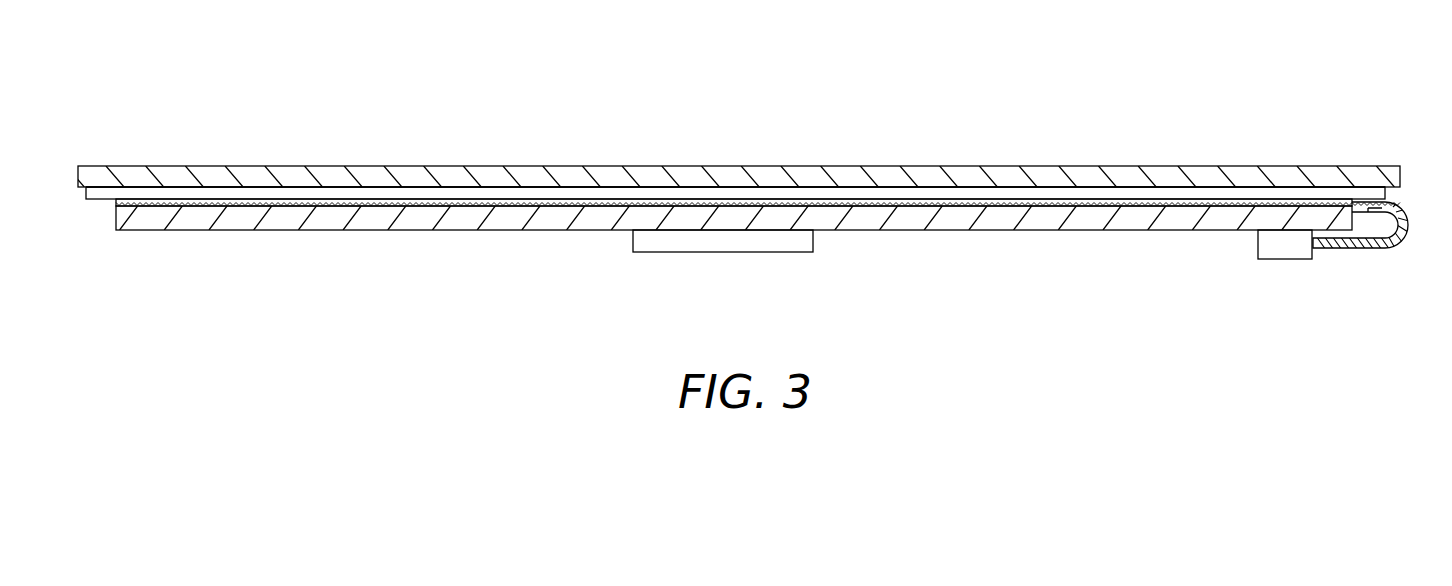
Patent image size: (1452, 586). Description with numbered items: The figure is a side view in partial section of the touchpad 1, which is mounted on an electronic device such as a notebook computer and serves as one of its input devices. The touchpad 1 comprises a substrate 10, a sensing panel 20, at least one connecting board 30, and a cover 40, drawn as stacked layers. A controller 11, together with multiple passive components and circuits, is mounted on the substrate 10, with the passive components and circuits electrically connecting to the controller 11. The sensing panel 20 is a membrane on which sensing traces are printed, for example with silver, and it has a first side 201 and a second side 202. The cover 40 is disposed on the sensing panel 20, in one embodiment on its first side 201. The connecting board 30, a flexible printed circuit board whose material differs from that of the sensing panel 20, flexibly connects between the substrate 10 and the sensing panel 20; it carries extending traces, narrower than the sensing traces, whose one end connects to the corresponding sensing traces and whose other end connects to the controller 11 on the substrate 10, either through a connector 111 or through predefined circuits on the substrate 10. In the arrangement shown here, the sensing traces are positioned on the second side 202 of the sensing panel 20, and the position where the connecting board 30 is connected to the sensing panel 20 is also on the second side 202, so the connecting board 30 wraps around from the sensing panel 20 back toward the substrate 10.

The touchpad 1 is at (758, 185).
The substrate 10 is at (965, 232).
The controller 11 is at (722, 254).
The connector 111 is at (1287, 261).
The sensing panel 20 is at (334, 195).
The first side 201 is at (1210, 184).
The second side 202 is at (1152, 206).
The connecting board 30 is at (1394, 250).
The cover 40 is at (539, 177).